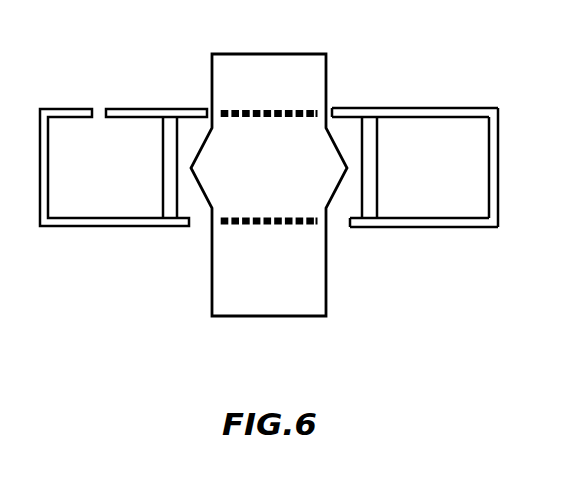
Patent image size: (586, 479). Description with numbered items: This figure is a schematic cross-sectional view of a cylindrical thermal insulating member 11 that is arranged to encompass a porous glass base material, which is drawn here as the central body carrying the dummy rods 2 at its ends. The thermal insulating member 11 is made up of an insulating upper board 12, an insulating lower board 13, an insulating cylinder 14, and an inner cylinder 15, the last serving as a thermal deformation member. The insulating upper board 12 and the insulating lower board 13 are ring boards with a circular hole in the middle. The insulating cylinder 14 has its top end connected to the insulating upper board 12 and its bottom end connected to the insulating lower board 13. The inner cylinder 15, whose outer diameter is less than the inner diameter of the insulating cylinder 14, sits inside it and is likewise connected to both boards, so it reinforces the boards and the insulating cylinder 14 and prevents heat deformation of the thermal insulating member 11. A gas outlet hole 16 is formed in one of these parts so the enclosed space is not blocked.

The dummy rod 2 is at (326, 68).
The thermal insulating member 11 is at (112, 124).
The insulating upper board 12 is at (448, 108).
The insulating lower board 13 is at (450, 227).
The insulating cylinder 14 is at (498, 166).
The inner cylinder 15 is at (162, 208).
The gas outlet hole 16 is at (100, 108).